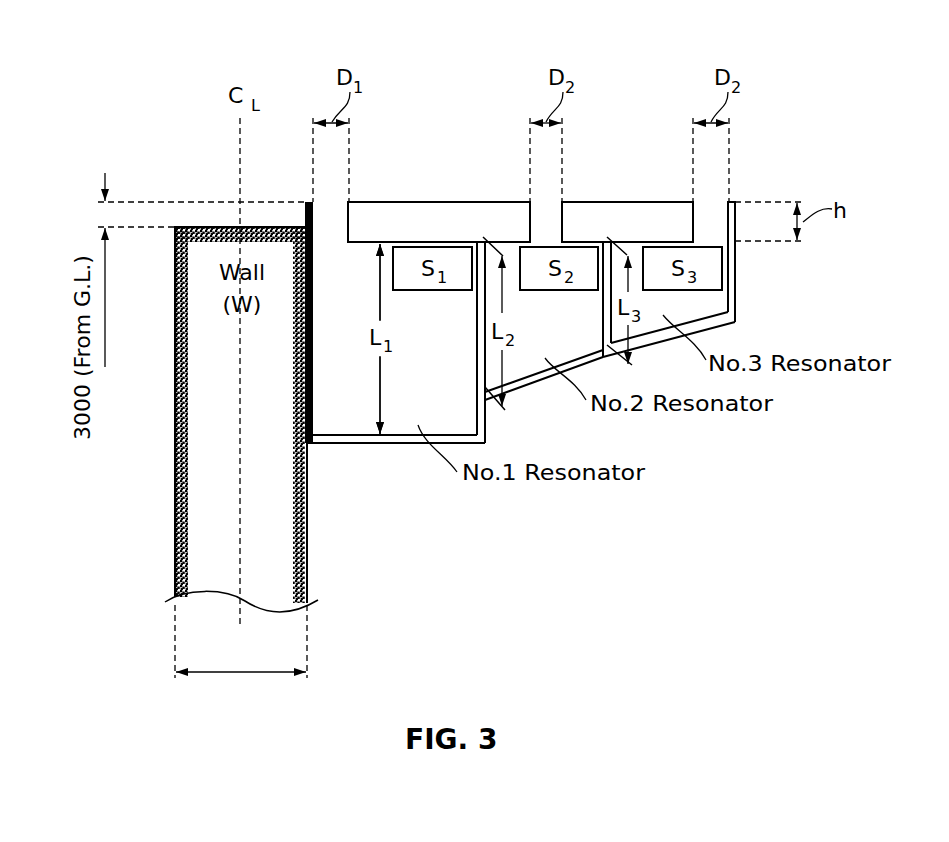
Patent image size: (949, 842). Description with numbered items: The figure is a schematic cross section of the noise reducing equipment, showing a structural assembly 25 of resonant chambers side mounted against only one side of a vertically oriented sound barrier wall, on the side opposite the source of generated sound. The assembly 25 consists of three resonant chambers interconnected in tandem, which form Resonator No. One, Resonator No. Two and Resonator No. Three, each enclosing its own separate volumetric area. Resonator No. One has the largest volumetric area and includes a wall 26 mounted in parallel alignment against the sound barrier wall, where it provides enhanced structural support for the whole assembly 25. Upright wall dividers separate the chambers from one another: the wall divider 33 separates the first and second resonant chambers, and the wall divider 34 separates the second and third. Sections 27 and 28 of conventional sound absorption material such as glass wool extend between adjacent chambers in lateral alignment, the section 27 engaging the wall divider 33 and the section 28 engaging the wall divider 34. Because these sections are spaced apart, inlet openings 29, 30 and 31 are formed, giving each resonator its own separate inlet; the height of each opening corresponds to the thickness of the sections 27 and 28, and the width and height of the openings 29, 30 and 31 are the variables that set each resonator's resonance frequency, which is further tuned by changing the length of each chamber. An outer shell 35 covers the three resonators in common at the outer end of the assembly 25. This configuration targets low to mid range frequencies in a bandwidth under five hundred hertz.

The structural assembly of resonant chambers 25 is at (822, 175).
The wall 26 is at (312, 362).
The section of sound absorption material 27 is at (460, 215).
The section of sound absorption material 28 is at (628, 215).
The inlet opening 29 is at (330, 221).
The inlet opening 30 is at (548, 221).
The inlet opening 31 is at (710, 221).
The wall divider 33 is at (480, 360).
The wall divider 34 is at (605, 327).
The outer shell 35 is at (735, 273).